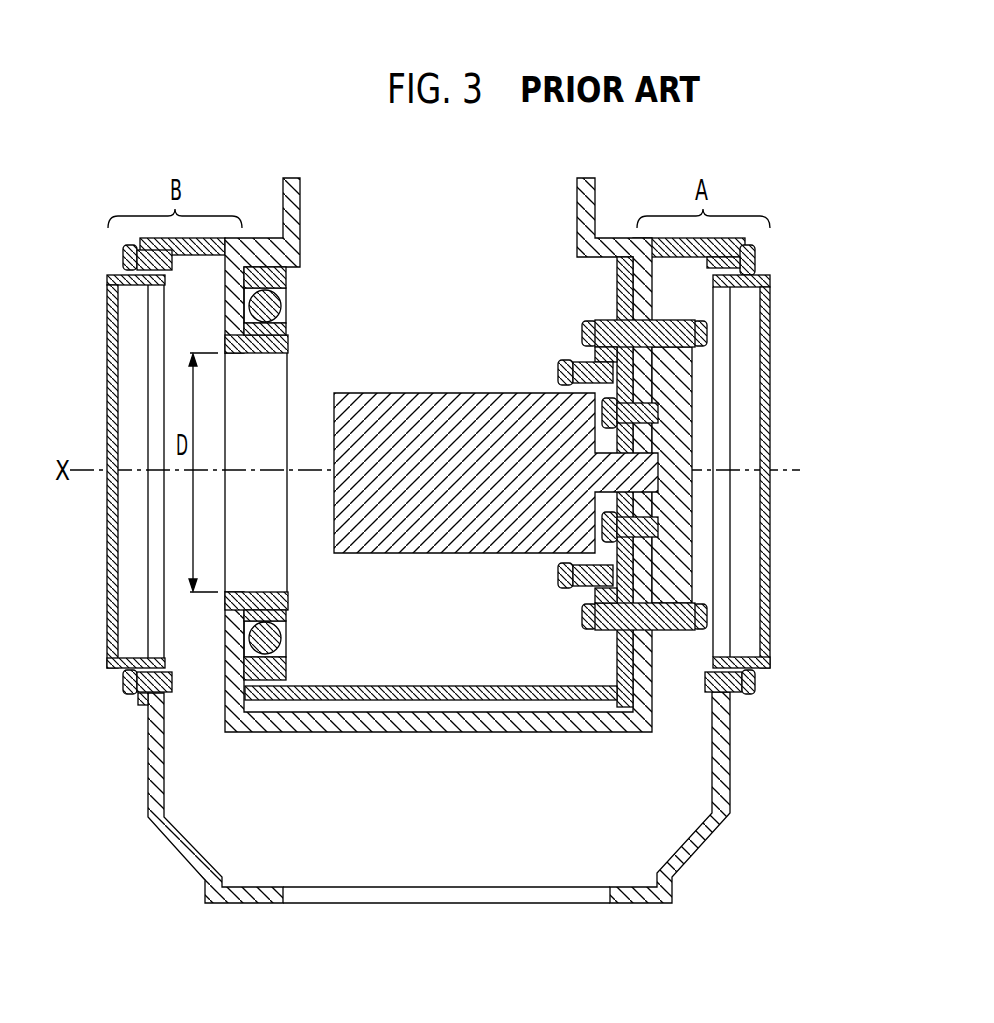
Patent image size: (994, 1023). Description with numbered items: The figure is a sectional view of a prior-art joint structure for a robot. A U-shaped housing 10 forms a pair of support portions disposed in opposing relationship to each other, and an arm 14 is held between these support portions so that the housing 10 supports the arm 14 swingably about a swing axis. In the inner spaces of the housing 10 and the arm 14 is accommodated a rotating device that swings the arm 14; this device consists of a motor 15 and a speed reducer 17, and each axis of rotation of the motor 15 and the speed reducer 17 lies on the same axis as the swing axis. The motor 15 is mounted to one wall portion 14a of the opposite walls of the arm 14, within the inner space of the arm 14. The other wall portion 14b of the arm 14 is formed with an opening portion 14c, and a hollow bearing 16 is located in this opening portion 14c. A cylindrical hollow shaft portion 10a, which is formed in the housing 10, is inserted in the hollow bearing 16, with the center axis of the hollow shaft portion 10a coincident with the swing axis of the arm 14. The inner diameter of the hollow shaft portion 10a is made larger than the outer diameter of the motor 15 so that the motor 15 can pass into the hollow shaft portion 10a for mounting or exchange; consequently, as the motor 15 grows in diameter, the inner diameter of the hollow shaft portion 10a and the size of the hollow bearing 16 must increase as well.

The housing 10 is at (245, 903).
The hollow shaft portion 10a is at (273, 602).
The arm 14 is at (283, 213).
The wall portion 14a is at (622, 672).
The wall portion 14b is at (260, 680).
The opening portion 14c is at (284, 648).
The motor 15 is at (493, 532).
The hollow bearing 16 is at (267, 638).
The speed reducer 17 is at (693, 423).